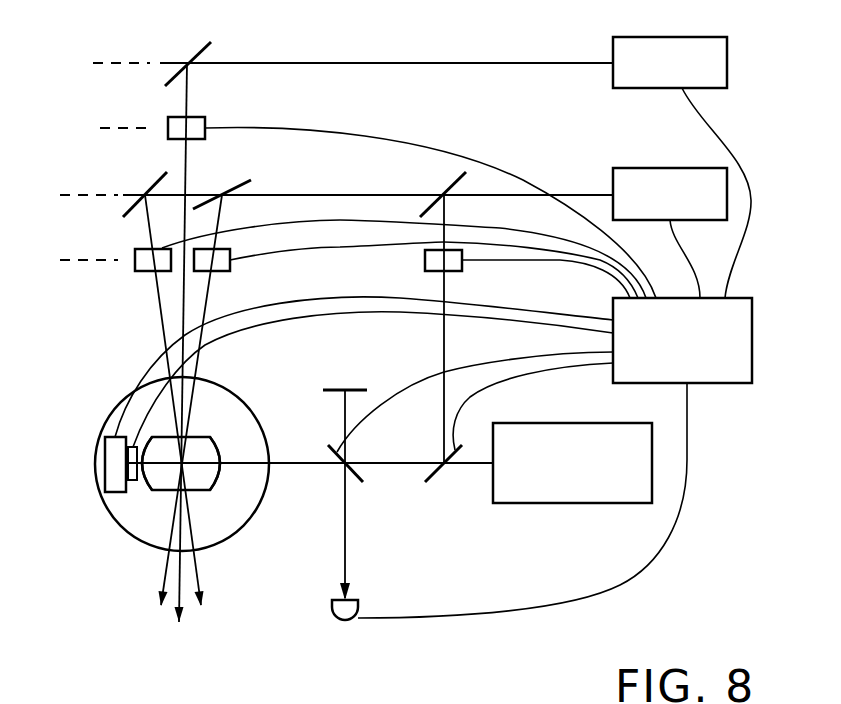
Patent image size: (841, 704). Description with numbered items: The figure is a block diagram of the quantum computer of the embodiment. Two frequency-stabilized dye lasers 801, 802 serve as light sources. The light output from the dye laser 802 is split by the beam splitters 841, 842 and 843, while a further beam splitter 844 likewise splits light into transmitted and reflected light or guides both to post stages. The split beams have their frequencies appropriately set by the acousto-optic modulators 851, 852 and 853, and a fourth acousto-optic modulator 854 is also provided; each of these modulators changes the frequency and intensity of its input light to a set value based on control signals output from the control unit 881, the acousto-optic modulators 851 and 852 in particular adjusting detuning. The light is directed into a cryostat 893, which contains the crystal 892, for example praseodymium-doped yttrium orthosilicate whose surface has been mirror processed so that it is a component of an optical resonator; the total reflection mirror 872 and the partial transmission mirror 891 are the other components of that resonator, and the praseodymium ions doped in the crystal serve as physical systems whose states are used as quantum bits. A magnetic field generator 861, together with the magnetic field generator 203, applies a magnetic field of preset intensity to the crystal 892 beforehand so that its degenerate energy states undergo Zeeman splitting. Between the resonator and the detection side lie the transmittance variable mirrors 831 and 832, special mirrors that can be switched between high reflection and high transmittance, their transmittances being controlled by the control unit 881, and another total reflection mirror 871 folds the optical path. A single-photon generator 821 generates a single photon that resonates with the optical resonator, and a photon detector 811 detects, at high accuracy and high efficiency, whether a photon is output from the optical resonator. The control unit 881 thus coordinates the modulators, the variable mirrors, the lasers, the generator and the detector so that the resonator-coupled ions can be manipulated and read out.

The dye laser 801 is at (728, 63).
The dye laser 802 is at (643, 167).
The photon detector 811 is at (345, 622).
The single-photon generator 821 is at (577, 504).
The transmittance variable mirror 831 is at (360, 484).
The transmittance variable mirror 832 is at (437, 477).
The beam splitter 841 is at (233, 185).
The beam splitter 842 is at (152, 185).
The beam splitter 843 is at (443, 180).
The beam splitter 844 is at (192, 44).
The acousto-optic modulator 851 is at (231, 265).
The acousto-optic modulator 852 is at (148, 272).
The acousto-optic modulator 853 is at (463, 266).
The acousto-optic modulator 854 is at (206, 116).
The magnetic field generator 861 is at (104, 468).
The total reflection mirror 871 is at (355, 388).
The total reflection mirror 872 is at (115, 435).
The control unit 881 is at (752, 343).
The partial transmission mirror 891 is at (220, 440).
The crystal 892 is at (205, 478).
The cryostat 893 is at (223, 543).
The magnetic field generator 203 is at (135, 490).